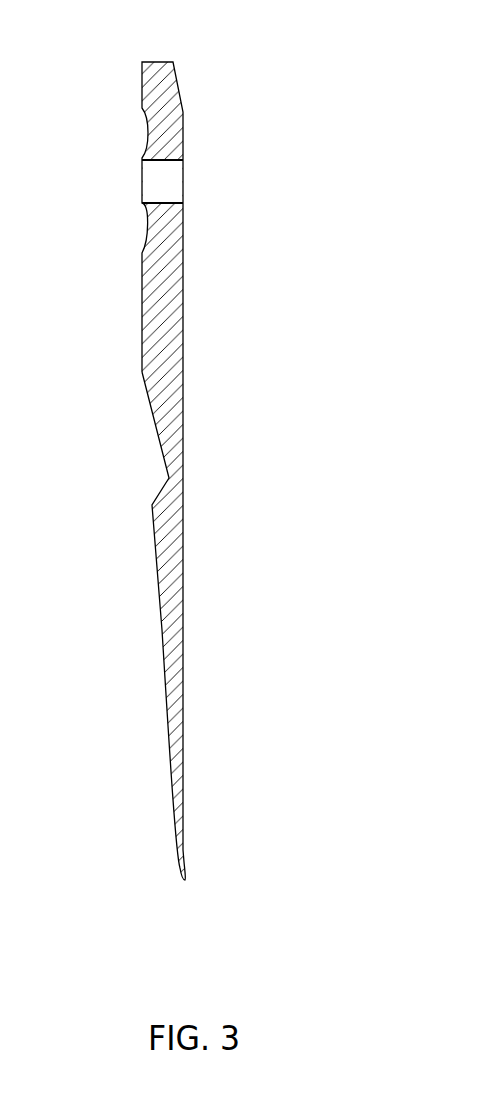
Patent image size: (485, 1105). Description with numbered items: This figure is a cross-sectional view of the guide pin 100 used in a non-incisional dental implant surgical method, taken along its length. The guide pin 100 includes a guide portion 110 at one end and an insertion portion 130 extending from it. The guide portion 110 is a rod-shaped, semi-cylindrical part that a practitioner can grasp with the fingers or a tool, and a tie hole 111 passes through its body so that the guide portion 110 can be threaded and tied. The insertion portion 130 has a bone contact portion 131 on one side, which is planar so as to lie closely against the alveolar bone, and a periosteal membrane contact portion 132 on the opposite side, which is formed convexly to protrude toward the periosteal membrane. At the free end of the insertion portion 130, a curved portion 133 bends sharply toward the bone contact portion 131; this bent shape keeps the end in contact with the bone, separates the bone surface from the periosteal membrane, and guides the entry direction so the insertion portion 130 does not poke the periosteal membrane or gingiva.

The guide pin 100 is at (193, 449).
The guide portion 110 is at (128, 98).
The tie hole 111 is at (168, 180).
The insertion portion 130 is at (164, 626).
The bone contact portion 131 is at (183, 653).
The periosteal membrane contact portion 132 is at (167, 700).
The curved portion 133 is at (187, 862).